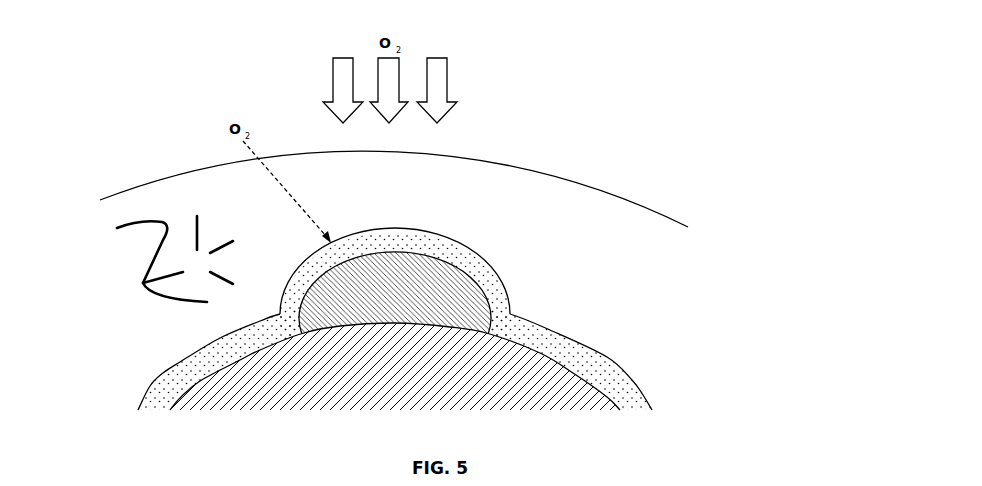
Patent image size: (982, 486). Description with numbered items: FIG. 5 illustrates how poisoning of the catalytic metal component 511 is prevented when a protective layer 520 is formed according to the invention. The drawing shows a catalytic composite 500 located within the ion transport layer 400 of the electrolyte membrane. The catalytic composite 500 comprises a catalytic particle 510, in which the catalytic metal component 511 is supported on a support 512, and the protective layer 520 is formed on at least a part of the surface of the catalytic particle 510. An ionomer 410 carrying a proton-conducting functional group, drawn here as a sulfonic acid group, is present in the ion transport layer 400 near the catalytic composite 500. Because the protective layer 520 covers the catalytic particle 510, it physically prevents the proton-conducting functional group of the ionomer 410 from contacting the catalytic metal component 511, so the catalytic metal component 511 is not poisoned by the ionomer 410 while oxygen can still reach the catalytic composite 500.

The catalytic composite 500 is at (153, 121).
The ion transport layer 400 is at (545, 190).
The ionomer 410 is at (130, 319).
The catalytic particle 510 is at (489, 319).
The catalytic metal component 511 is at (450, 305).
The support 512 is at (520, 373).
The protective layer 520 is at (645, 392).